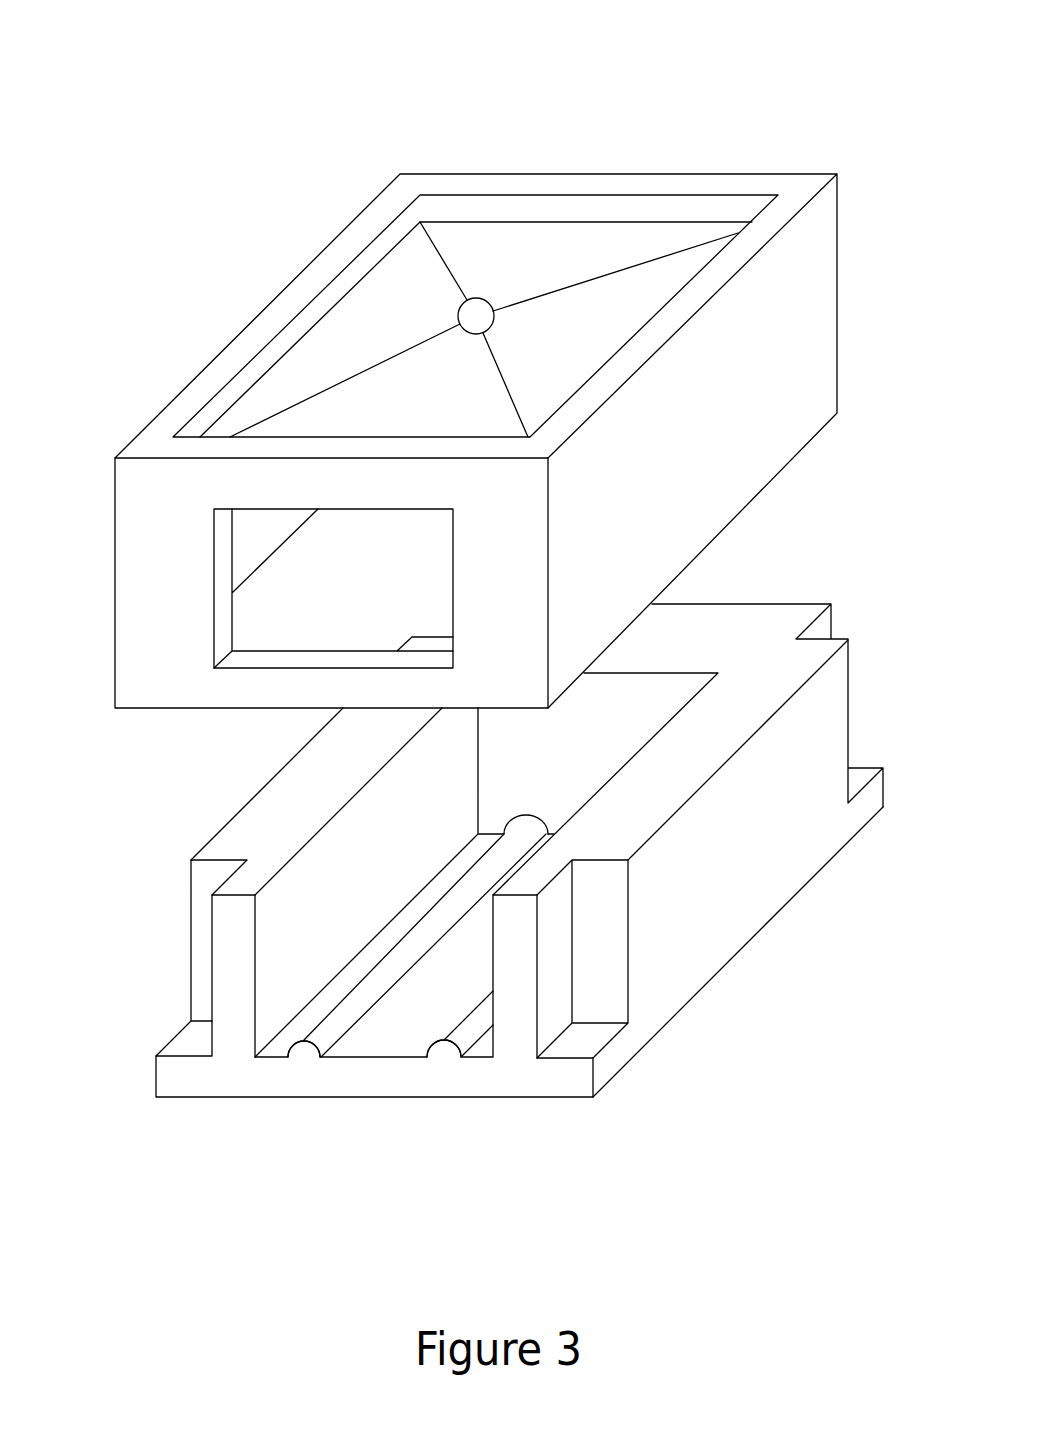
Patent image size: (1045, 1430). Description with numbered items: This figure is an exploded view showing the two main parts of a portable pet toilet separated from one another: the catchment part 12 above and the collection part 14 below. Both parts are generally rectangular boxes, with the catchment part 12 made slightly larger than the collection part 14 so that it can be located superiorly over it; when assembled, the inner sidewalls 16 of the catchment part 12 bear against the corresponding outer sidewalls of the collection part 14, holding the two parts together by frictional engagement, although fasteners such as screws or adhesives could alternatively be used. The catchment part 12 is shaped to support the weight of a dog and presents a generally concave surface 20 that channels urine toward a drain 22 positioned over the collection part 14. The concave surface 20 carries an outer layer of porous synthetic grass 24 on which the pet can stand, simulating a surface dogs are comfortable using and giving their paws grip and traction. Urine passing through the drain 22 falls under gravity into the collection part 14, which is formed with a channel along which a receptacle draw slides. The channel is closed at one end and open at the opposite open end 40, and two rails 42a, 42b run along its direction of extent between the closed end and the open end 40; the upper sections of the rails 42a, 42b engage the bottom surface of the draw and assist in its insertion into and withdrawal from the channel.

The catchment part 12 is at (709, 160).
The collection part 14 is at (796, 853).
The inner sidewalls 16 is at (262, 528).
The concave surface 20 is at (382, 273).
The drain 22 is at (482, 299).
The synthetic grass 24 is at (332, 352).
The open end 40 is at (377, 1057).
The rail 42a is at (303, 1040).
The rail 42b is at (477, 1020).